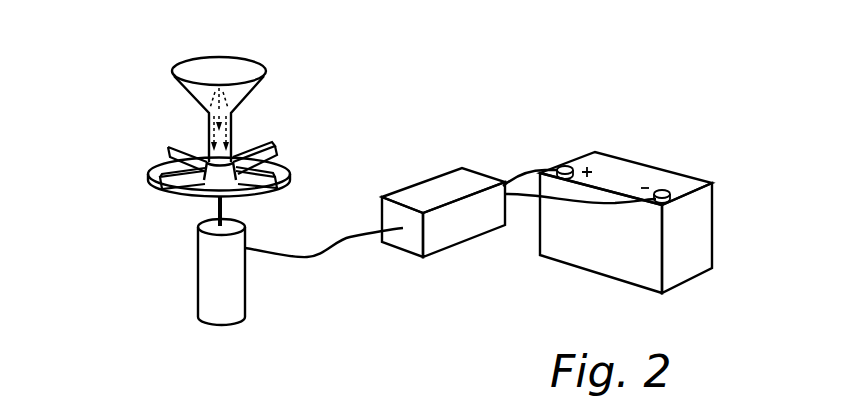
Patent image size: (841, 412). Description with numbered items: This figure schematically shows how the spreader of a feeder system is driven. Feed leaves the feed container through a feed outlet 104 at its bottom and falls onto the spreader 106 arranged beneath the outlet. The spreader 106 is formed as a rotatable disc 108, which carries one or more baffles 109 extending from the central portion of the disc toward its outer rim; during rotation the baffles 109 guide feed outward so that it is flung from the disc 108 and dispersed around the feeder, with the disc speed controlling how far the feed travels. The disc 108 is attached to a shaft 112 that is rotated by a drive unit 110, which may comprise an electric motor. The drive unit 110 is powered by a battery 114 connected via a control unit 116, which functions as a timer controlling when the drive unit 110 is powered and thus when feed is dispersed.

The feed outlet 104 is at (233, 128).
The spreader 106 is at (136, 146).
The rotatable disc 108 is at (289, 182).
The baffles 109 is at (177, 147).
The drive unit 110 is at (216, 288).
The shaft 112 is at (213, 207).
The battery 114 is at (693, 233).
The control unit 116 is at (412, 197).